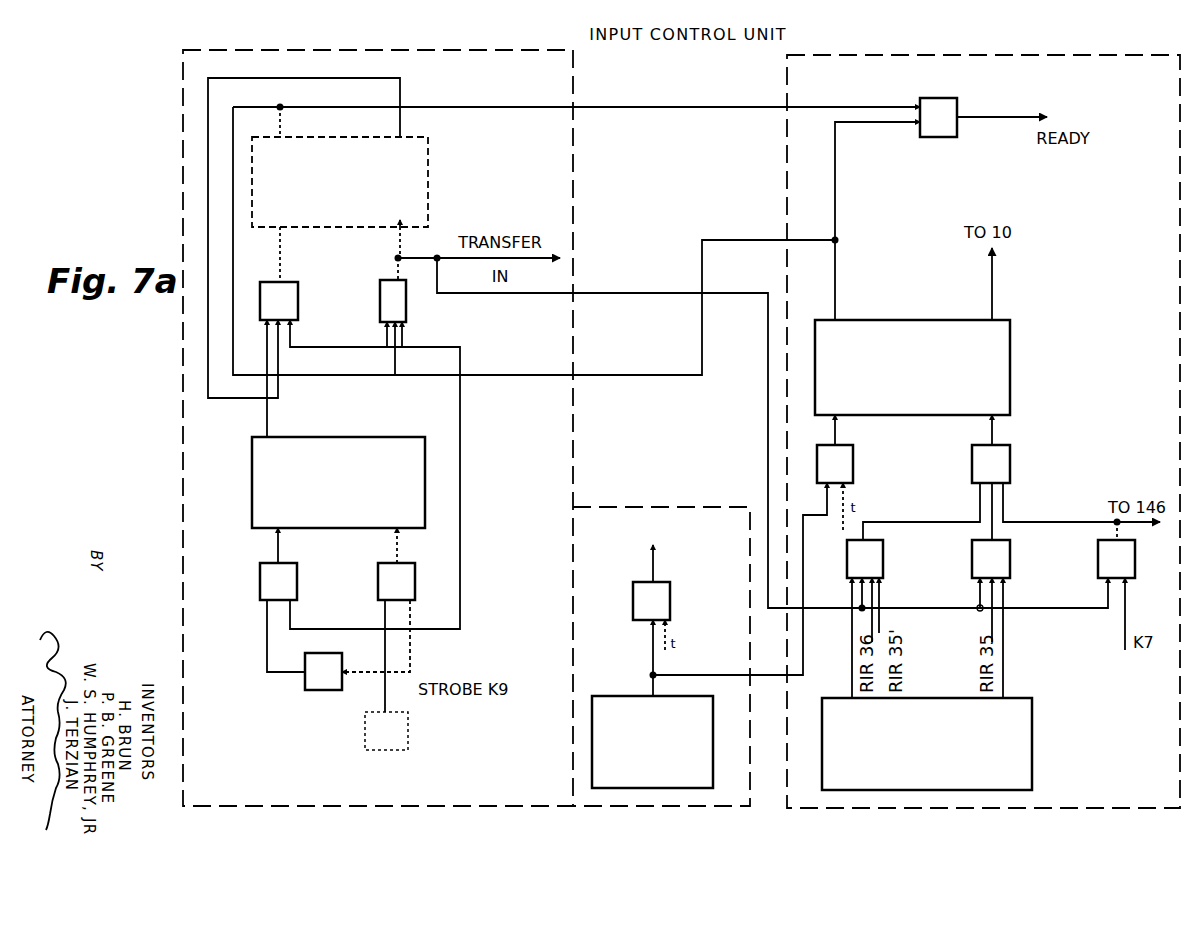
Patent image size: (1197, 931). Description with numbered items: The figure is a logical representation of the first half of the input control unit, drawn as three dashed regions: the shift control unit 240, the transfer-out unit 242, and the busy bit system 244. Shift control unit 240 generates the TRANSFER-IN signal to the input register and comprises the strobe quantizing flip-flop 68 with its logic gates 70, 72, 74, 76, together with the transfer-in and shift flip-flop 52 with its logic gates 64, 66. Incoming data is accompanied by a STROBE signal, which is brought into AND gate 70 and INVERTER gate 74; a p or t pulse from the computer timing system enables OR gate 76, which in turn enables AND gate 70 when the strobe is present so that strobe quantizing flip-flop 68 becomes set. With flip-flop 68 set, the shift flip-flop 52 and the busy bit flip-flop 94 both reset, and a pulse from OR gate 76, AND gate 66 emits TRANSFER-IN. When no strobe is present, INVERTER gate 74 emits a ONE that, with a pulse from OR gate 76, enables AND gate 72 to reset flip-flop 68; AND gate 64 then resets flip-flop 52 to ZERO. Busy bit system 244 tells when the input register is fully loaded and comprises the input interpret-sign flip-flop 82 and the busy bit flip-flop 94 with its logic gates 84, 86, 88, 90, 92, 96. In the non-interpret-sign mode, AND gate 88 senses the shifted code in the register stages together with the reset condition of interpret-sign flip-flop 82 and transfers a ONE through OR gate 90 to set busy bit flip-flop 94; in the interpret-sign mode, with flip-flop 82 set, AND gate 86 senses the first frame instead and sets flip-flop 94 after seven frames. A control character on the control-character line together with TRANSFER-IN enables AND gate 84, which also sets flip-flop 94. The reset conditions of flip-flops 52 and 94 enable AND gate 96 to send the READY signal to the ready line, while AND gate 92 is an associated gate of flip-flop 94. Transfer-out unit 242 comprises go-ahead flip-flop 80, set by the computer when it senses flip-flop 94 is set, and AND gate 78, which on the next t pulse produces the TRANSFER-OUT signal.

The transfer in and shift flip-flop 52 is at (438, 191).
The AND gate 64 is at (300, 305).
The AND gate 66 is at (378, 293).
The strobe quantizing flip-flop 68 is at (252, 478).
The AND gate 70 is at (378, 583).
The AND gate 72 is at (259, 581).
The INVERTER gate 74 is at (300, 679).
The OR gate 76 is at (413, 733).
The AND gate 78 is at (671, 607).
The go-ahead flip-flop 80 is at (715, 745).
The input interpret-sign flip-flop 82 is at (1034, 741).
The AND gate 84 is at (1097, 557).
The AND gate 86 is at (1012, 570).
The AND gate 88 is at (885, 562).
The OR gate 90 is at (1012, 466).
The AND gate 92 is at (855, 462).
The busy bit flip-flop 94 is at (1012, 382).
The AND gate 96 is at (935, 140).
The shift control unit 240 is at (574, 210).
The transfer-out unit 242 is at (650, 506).
The busy bit system 244 is at (1160, 336).